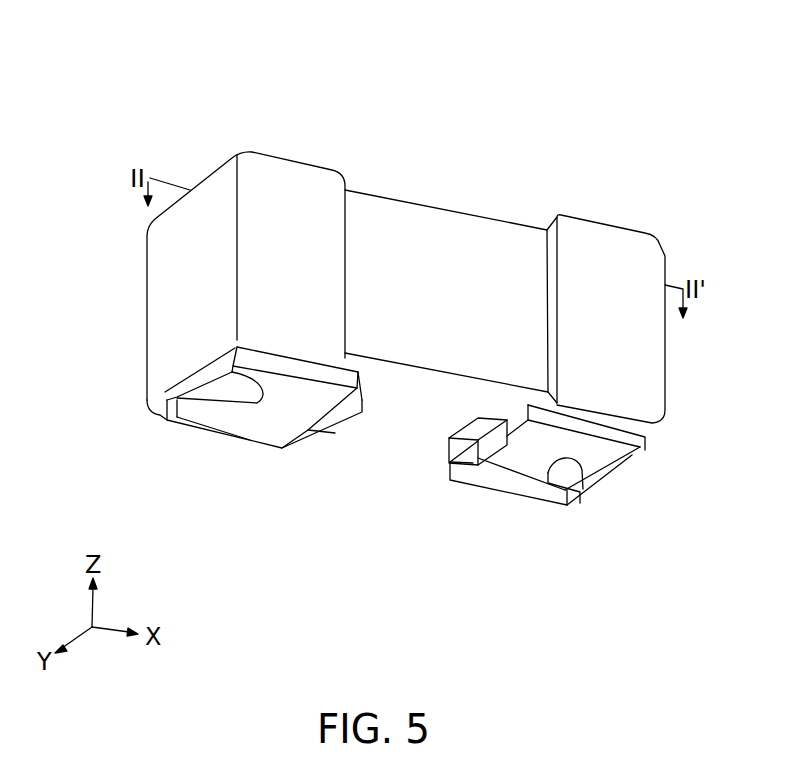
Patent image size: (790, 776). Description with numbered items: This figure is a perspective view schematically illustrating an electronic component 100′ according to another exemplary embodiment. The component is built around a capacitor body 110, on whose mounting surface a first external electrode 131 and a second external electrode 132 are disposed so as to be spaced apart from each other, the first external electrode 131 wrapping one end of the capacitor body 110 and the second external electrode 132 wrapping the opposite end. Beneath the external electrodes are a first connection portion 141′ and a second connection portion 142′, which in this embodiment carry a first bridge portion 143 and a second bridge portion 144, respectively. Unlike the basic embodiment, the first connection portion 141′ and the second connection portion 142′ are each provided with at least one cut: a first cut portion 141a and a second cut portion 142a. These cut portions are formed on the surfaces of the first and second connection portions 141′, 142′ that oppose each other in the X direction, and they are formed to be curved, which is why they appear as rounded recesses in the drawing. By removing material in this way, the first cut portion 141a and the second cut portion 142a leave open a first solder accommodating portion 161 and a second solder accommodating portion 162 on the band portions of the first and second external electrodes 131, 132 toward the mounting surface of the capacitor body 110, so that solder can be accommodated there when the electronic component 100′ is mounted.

The electronic component 100′ is at (537, 56).
The capacitor body 110 is at (437, 240).
The first external electrode 131 is at (296, 158).
The second external electrode 132 is at (583, 214).
The first connection portion 141′ is at (264, 451).
The first cut portion 141a is at (238, 420).
The second connection portion 142′ is at (536, 504).
The second cut portion 142a is at (573, 492).
The first bridge portion 143 is at (322, 440).
The second bridge portion 144 is at (468, 470).
The first solder accommodating portion 161 is at (200, 420).
The second solder accommodating portion 162 is at (595, 475).